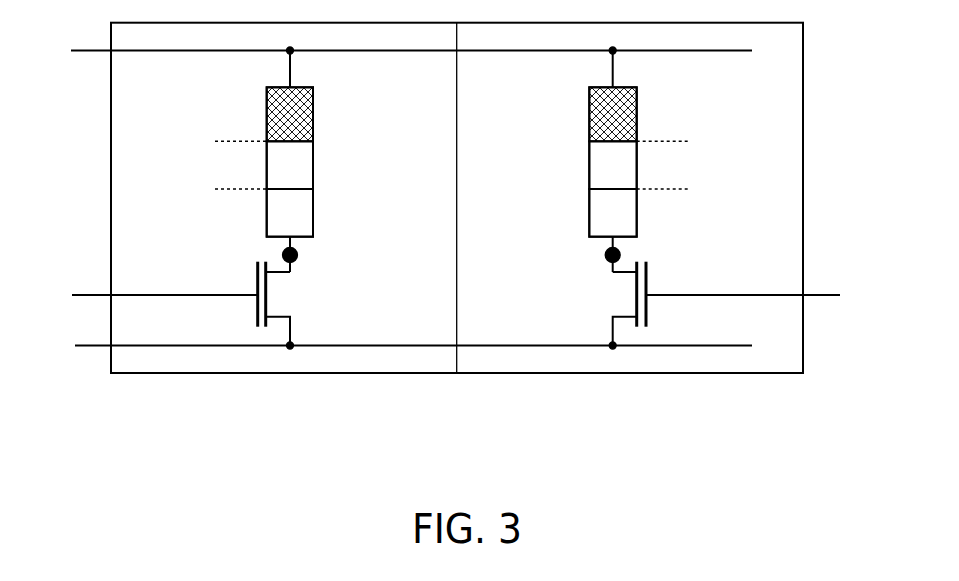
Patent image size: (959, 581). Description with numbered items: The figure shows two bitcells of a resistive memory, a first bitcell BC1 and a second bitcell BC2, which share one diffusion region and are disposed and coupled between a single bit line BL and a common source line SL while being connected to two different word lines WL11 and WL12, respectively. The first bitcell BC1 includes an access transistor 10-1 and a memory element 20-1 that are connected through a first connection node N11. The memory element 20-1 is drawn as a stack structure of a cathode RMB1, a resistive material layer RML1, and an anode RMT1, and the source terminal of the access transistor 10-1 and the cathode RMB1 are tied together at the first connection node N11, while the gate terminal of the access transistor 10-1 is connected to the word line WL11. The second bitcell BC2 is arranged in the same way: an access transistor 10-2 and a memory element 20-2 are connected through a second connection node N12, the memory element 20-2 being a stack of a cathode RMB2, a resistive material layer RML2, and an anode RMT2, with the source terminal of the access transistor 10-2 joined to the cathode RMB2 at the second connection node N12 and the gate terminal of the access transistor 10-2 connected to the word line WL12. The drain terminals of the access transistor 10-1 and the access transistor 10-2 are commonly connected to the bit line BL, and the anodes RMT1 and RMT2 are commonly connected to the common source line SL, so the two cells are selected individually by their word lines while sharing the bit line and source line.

The common source line SL is at (390, 57).
The bit line BL is at (395, 350).
The word line WL11 is at (131, 296).
The word line WL12 is at (784, 296).
The first bitcell BC1 is at (270, 265).
The second bitcell BC2 is at (632, 265).
The memory element 20-1 is at (282, 153).
The memory element 20-2 is at (613, 153).
The access transistor 10-1 is at (249, 327).
The access transistor 10-2 is at (658, 323).
The first connection node N11 is at (297, 259).
The second connection node N12 is at (606, 258).
The anode RMT1 is at (236, 114).
The resistive material layer RML1 is at (236, 165).
The cathode RMB1 is at (236, 213).
The anode RMT2 is at (661, 114).
The resistive material layer RML2 is at (661, 165).
The cathode RMB2 is at (662, 213).